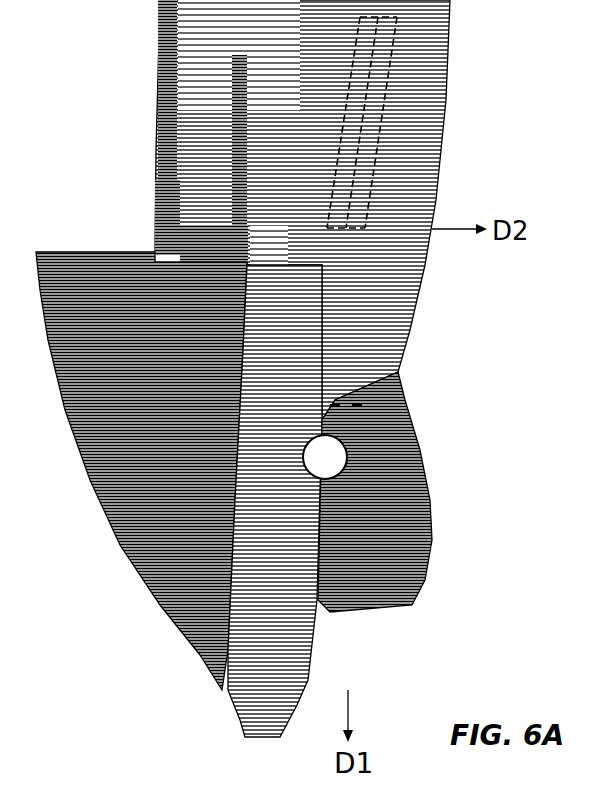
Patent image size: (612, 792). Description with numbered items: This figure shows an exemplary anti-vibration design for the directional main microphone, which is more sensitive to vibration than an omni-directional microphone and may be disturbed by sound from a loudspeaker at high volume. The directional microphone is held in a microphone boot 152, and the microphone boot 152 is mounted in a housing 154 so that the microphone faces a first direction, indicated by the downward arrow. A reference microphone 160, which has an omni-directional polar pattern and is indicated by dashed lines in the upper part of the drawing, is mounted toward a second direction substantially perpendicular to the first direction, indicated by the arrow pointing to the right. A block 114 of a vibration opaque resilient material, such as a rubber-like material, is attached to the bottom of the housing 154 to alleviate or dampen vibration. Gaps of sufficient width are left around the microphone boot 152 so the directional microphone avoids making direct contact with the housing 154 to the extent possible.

The reference microphone 160 is at (372, 100).
The block of vibration opaque resilient material 114 is at (90, 517).
The microphone boot 152 is at (423, 518).
The housing 154 is at (310, 668).